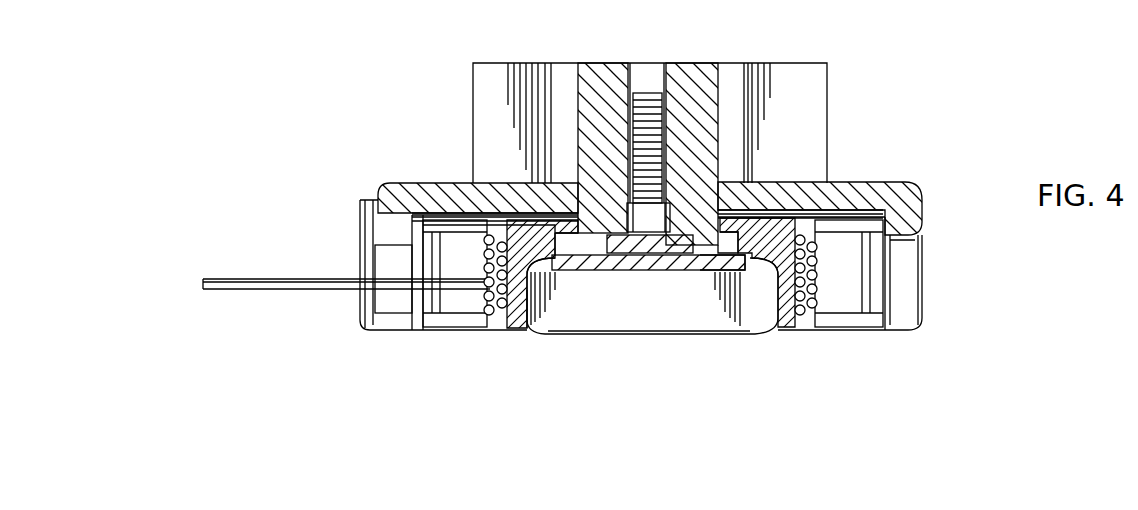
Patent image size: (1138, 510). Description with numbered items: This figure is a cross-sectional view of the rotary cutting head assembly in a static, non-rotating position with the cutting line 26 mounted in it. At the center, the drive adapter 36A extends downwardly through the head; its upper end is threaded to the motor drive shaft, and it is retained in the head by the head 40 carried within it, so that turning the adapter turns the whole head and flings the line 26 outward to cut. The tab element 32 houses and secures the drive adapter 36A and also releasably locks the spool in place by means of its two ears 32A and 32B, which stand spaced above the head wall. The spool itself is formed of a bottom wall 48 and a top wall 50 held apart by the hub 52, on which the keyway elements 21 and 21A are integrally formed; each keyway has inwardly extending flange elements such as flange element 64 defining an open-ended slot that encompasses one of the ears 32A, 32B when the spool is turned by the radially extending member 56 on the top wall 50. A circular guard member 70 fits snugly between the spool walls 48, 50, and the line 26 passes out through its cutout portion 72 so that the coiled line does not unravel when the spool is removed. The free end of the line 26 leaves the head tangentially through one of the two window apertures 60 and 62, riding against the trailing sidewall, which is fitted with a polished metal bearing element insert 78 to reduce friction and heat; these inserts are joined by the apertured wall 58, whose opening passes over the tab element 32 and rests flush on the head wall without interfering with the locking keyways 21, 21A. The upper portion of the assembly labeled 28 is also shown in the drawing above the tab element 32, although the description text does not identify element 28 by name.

The keyway element 21 is at (545, 240).
The keyway element 21A is at (770, 245).
The cutting line 26 is at (232, 290).
The body 28 is at (787, 82).
The tab element 32 is at (598, 62).
The ear 32A is at (567, 255).
The ear 32B is at (727, 255).
The drive adapter 36A is at (650, 95).
The head 40 is at (655, 212).
The bottom wall 48 is at (913, 182).
The top wall 50 is at (497, 330).
The hub 52 is at (548, 333).
The radially extending member 56 is at (687, 335).
The apertured wall 58 is at (770, 200).
The window aperture 60 is at (903, 303).
The window aperture 62 is at (372, 323).
The flange element 64 is at (538, 185).
The guard member 70 is at (882, 260).
The cutout portion 72 is at (412, 235).
The bearing element insert 78 is at (387, 262).